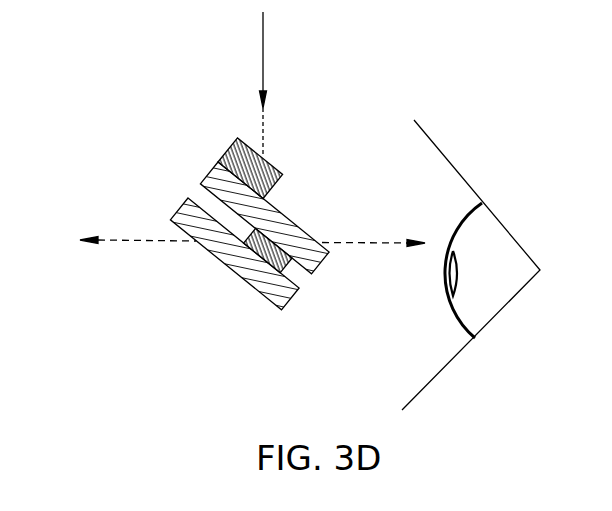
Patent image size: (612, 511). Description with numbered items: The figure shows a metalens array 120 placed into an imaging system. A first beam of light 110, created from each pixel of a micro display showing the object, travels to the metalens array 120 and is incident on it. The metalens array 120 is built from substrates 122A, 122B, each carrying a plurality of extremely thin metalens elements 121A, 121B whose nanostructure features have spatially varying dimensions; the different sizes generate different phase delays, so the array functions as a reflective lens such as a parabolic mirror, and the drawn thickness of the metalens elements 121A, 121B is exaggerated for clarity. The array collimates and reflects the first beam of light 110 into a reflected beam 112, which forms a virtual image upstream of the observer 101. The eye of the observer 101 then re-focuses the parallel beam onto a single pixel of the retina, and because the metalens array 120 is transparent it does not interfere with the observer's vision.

The observer 101 is at (503, 310).
The first beam of light 110 is at (265, 52).
The reflected beam 112 is at (362, 245).
The metalens array 120 is at (310, 233).
The metalens elements 121A is at (232, 143).
The metalens elements 121B is at (287, 270).
The substrate 122A is at (220, 183).
The substrate 122B is at (190, 220).